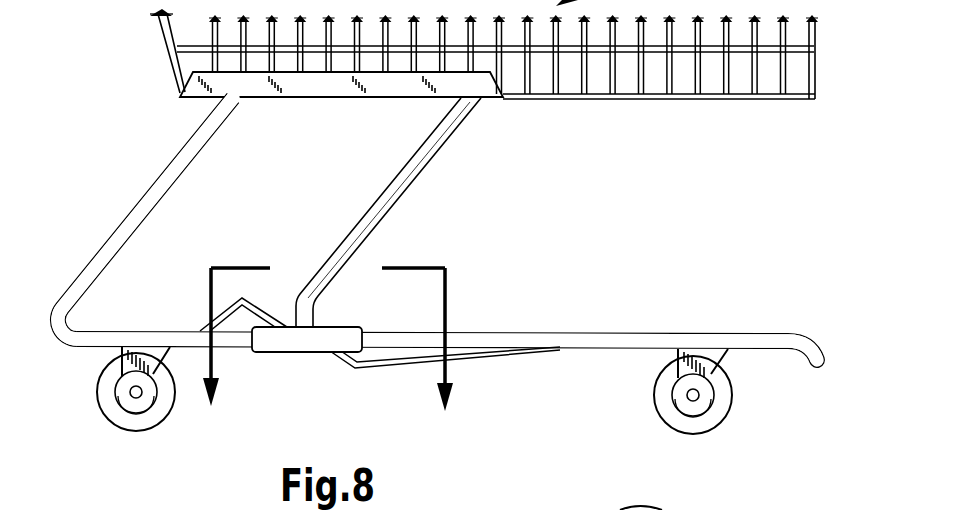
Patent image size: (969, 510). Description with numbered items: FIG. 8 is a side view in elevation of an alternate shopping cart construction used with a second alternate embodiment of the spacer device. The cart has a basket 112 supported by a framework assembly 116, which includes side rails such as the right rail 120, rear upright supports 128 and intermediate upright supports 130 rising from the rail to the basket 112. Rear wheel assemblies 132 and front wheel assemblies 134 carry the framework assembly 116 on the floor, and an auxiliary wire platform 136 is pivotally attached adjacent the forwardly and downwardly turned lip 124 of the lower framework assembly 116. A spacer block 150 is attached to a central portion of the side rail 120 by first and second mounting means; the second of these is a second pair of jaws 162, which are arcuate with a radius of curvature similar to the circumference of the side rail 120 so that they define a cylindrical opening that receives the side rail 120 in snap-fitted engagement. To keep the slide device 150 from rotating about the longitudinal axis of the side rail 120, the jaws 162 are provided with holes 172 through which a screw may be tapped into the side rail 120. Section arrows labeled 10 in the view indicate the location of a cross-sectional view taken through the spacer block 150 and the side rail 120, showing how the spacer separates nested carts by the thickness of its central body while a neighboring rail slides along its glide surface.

The section line / cart 10 is at (330, 355).
The basket 112 is at (613, 100).
The framework assembly 116 is at (155, 156).
The right rail 120 is at (568, 350).
The forwardly and downwardly turned lip 124 is at (826, 368).
The rear upright support 128 is at (133, 225).
The intermediate upright support 130 is at (423, 170).
The rear wheel assembly 132 is at (140, 432).
The front wheel assembly 134 is at (693, 433).
The auxiliary wire platform 136 is at (457, 362).
The spacer block 150 is at (272, 350).
The holes 172 is at (610, 509).
The second pair of jaws 162 is at (550, 507).